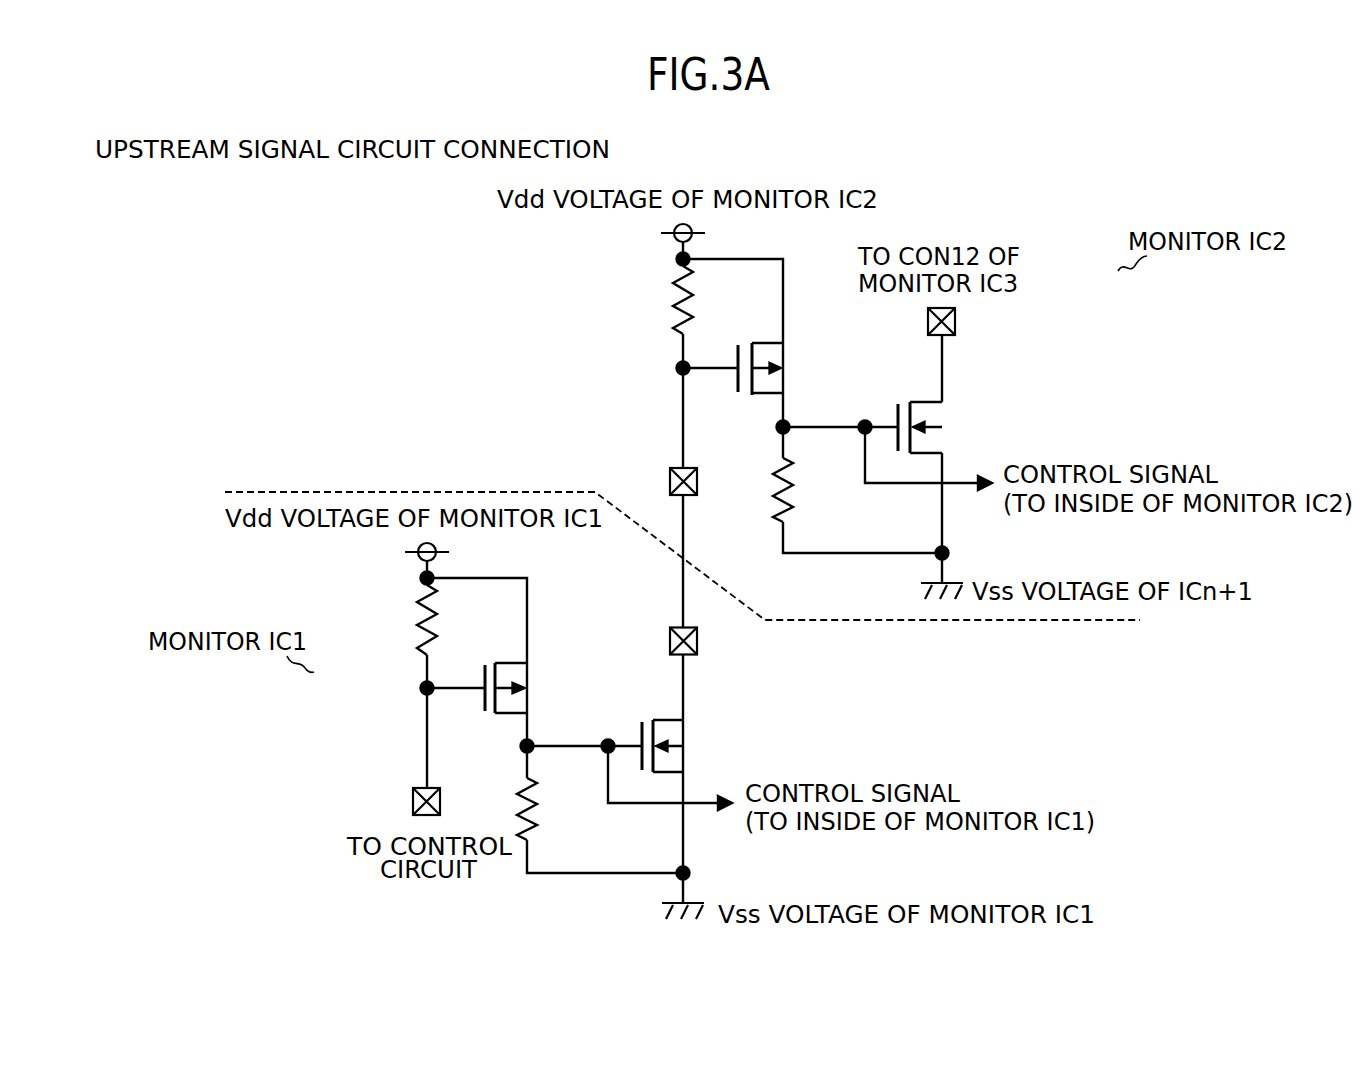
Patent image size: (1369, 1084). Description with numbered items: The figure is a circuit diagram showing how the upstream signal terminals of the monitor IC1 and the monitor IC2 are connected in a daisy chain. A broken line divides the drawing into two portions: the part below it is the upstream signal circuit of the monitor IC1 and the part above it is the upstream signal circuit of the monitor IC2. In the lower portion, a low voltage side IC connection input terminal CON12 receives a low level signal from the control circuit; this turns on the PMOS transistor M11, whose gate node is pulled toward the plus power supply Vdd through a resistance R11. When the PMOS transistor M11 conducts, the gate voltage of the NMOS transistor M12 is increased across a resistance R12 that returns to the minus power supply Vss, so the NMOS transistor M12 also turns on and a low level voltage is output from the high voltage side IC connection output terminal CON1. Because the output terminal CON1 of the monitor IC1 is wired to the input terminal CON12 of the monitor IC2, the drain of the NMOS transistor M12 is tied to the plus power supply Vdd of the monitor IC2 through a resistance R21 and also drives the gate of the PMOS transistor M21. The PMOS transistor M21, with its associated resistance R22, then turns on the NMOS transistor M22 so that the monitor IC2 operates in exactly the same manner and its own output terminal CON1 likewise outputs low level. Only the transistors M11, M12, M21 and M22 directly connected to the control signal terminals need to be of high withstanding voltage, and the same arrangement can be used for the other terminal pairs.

The resistance R11 is at (403, 620).
The resistance R12 is at (552, 809).
The PMOS transistor M11 is at (501, 674).
The NMOS transistor M12 is at (655, 731).
The resistance R21 is at (659, 300).
The resistance R22 is at (808, 490).
The PMOS transistor M21 is at (757, 354).
The NMOS transistor M22 is at (916, 412).
The high voltage side IC connection output terminal CON1 is at (697, 655).
The low voltage side IC connection input terminal CON12 is at (670, 471).